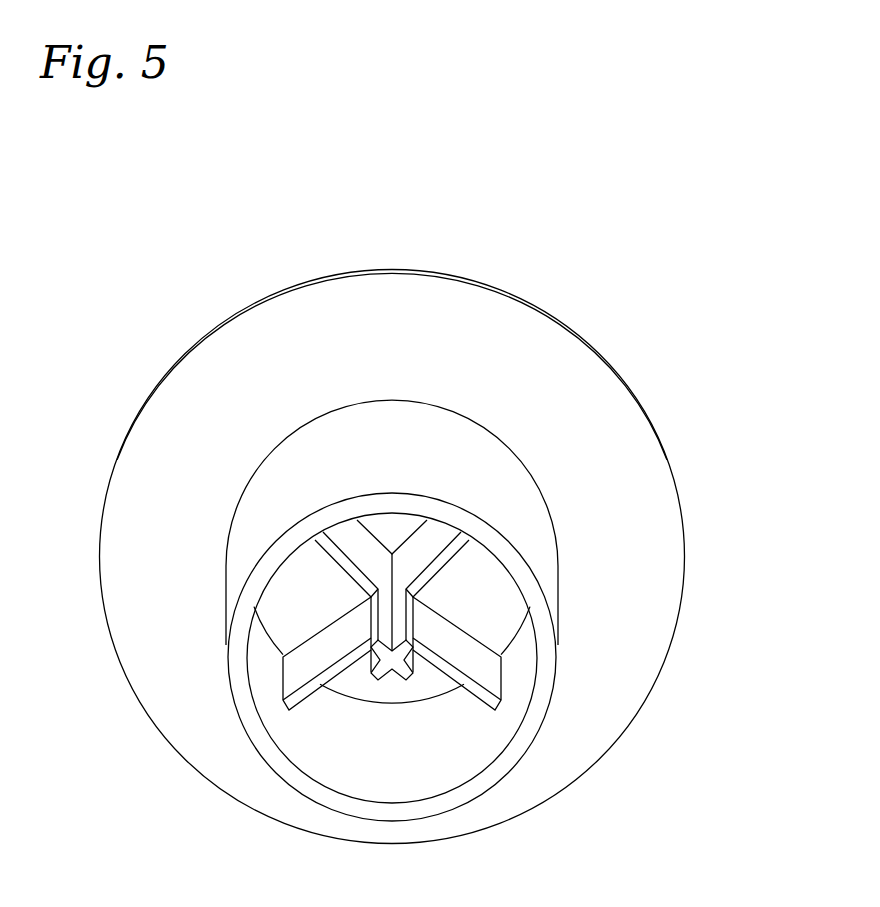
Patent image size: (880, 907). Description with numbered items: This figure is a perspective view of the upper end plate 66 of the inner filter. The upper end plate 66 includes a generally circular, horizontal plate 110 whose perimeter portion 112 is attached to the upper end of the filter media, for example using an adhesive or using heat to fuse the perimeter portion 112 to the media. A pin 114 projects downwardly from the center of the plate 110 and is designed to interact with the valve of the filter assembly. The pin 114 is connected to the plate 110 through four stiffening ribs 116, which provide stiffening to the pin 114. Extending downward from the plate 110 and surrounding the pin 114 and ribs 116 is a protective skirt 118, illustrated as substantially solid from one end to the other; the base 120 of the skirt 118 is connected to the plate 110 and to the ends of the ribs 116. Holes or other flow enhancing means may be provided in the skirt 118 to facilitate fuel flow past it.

The upper end plate 66 is at (481, 247).
The plate 110 is at (629, 463).
The perimeter portion 112 is at (643, 625).
The pin 114 is at (398, 674).
The stiffening ribs 116 is at (455, 672).
The protective skirt 118 is at (357, 449).
The base 120 is at (428, 421).